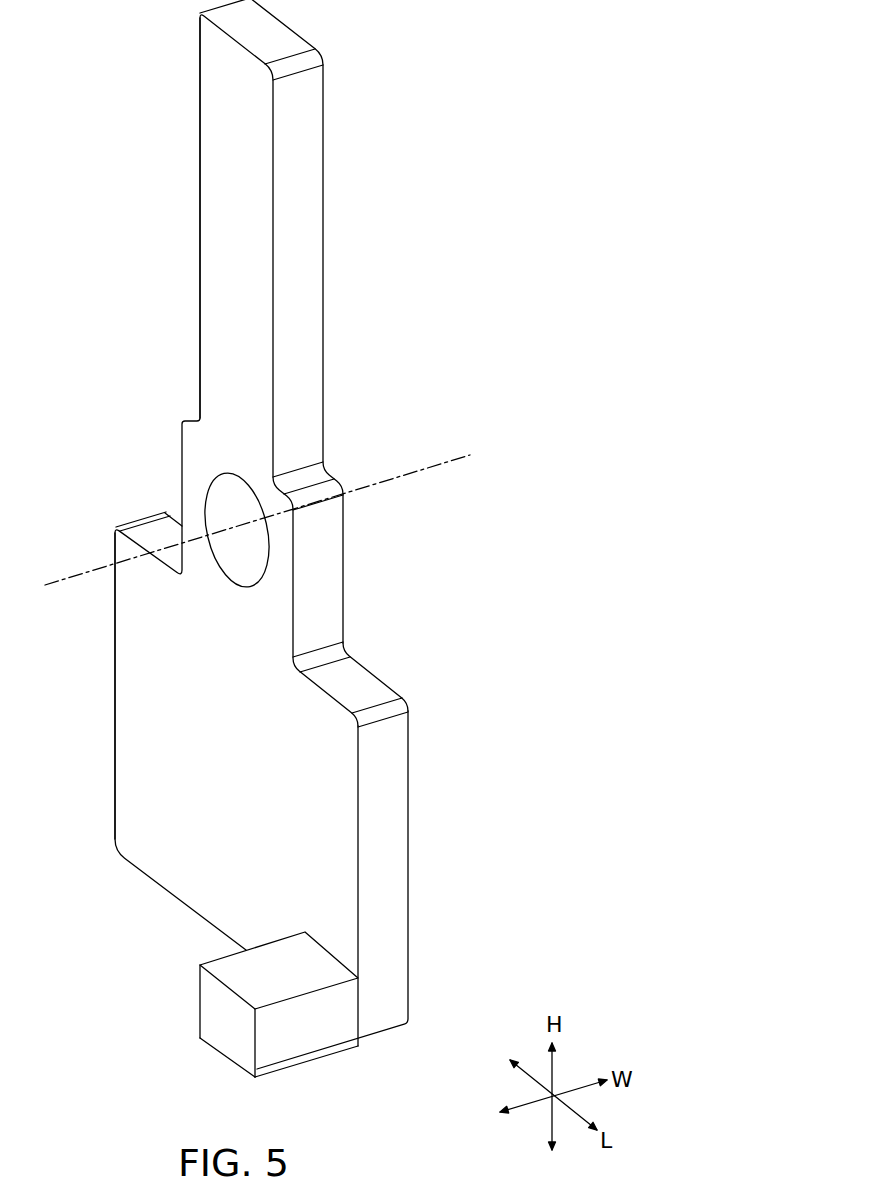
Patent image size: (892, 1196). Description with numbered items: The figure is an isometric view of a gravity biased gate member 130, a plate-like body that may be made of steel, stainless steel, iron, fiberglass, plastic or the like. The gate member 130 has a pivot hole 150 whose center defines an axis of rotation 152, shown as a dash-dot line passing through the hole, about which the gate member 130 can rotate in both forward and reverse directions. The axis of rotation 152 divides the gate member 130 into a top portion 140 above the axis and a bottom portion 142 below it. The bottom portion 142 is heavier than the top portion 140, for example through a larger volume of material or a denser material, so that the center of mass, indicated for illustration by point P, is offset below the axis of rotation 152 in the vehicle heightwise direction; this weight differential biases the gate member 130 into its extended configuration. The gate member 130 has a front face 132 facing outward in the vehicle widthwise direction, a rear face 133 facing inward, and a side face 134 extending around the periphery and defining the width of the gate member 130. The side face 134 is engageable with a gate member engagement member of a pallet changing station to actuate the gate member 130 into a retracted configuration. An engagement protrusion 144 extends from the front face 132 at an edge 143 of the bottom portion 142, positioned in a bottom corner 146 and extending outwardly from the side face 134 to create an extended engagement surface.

The gravity biased gate member 130 is at (210, 482).
The front face 132 is at (227, 173).
The rear face 133 is at (387, 698).
The side face 134 is at (397, 793).
The top portion 140 is at (210, 262).
The bottom portion 142 is at (153, 843).
The edge 143 is at (360, 948).
The engagement protrusion 144 is at (200, 1003).
The bottom corner 146 is at (320, 938).
The pivot hole 150 is at (214, 547).
The axis of rotation 152 is at (95, 558).
The point P is at (252, 710).